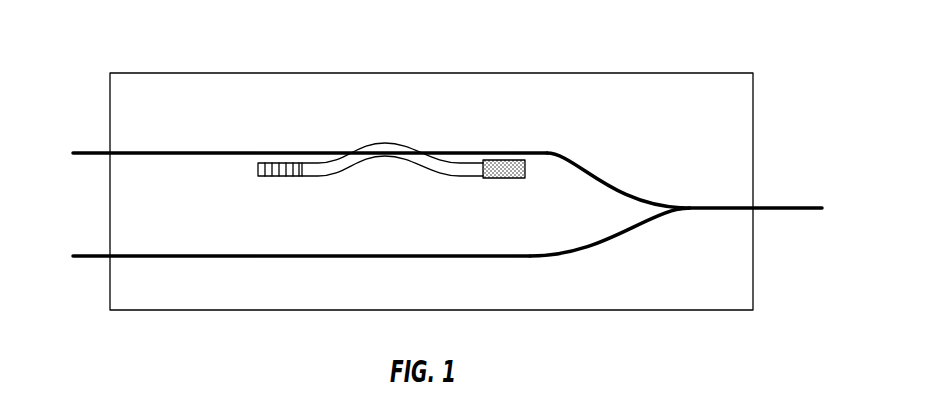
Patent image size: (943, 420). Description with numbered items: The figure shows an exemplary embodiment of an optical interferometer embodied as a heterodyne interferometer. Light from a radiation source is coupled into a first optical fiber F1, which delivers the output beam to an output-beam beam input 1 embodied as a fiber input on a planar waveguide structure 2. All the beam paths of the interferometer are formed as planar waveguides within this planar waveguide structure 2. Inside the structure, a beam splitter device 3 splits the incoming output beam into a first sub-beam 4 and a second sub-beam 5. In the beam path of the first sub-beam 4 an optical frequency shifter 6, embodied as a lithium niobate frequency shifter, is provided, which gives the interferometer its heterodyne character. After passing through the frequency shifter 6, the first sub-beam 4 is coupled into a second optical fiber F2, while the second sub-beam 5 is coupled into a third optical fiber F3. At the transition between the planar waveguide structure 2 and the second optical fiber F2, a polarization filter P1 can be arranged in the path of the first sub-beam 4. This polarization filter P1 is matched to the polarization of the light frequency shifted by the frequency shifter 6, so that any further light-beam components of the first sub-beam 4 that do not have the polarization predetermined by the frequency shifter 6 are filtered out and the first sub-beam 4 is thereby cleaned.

The output-beam beam input 1 is at (758, 204).
The planar waveguide structure 2 is at (210, 72).
The beam splitter device 3 is at (688, 211).
The first sub-beam 4 is at (554, 152).
The second sub-beam 5 is at (616, 245).
The optical frequency shifter 6 is at (397, 158).
The first optical fiber F1 is at (802, 205).
The second optical fiber F2 is at (86, 151).
The third optical fiber F3 is at (90, 258).
The polarization filter P1 is at (108, 152).